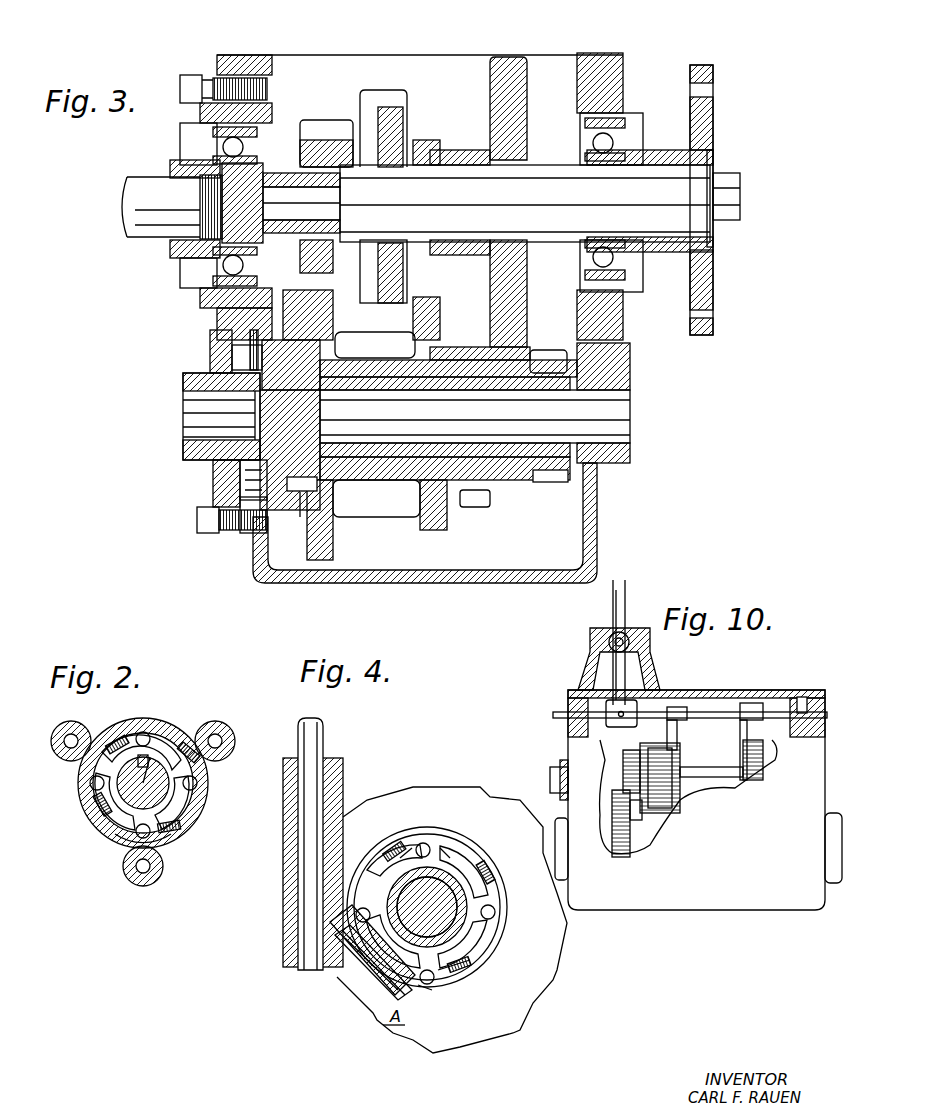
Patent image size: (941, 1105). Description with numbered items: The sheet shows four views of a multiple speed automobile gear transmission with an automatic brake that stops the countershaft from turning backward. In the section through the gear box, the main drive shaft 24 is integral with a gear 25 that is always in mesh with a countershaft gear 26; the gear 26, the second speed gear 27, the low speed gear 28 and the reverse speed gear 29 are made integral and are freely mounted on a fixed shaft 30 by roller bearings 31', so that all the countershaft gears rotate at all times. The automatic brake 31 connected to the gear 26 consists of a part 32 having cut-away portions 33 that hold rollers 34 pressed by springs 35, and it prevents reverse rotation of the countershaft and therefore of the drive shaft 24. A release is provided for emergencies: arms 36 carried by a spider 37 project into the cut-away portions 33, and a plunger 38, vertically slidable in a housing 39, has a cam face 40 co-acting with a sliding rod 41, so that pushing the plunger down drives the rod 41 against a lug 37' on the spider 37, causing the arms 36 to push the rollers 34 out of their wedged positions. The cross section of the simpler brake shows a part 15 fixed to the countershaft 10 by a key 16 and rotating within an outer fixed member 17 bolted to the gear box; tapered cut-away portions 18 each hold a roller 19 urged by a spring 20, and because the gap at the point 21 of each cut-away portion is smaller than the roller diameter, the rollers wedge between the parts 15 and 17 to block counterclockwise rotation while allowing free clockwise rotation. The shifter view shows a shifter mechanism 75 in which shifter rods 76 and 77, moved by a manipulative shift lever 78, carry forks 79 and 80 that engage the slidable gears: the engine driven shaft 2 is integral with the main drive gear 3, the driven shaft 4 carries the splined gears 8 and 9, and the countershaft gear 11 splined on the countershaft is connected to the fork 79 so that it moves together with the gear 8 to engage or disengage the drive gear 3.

In FIG. 10, the engine driven shaft 2 is at (556, 782).
In FIG. 10, the main drive gear 3 is at (627, 773).
In FIG. 3, the driven shaft 4 is at (204, 353).
In FIG. 10, the driven shaft 4 is at (686, 780).
In FIG. 10, the gear 8 is at (660, 810).
In FIG. 10, the gear 9 is at (750, 780).
In FIG. 2, the countershaft 10 is at (112, 837).
In FIG. 10, the countershaft gear 11 is at (618, 842).
In FIG. 2, the part 15 is at (163, 753).
In FIG. 2, the key 16 is at (150, 757).
In FIG. 2, the outer fixed member 17 is at (83, 730).
In FIG. 2, the cut-away portions 18 is at (193, 807).
In FIG. 2, the roller 19 is at (200, 787).
In FIG. 2, the spring 20 is at (220, 768).
In FIG. 2, the point 21 is at (187, 840).
In FIG. 3, the main drive shaft 24 is at (138, 240).
In FIG. 3, the gear 25 is at (302, 122).
In FIG. 3, the countershaft gear 26 is at (335, 324).
In FIG. 4, the countershaft gear 26 is at (493, 900).
In FIG. 3, the second speed gear 27 is at (438, 297).
In FIG. 3, the low speed gear 28 is at (453, 335).
In FIG. 3, the reverse speed gear 29 is at (538, 348).
In FIG. 3, the fixed shaft 30 is at (600, 405).
In FIG. 3, the automatic brake 31 is at (397, 542).
In FIG. 4, the automatic brake 31 is at (441, 907).
In FIG. 3, the roller bearings 31' is at (445, 446).
In FIG. 3, the part 32 is at (310, 465).
In FIG. 4, the part 32 is at (467, 873).
In FIG. 4, the cut-away portions 33 is at (424, 843).
In FIG. 3, the rollers 34 is at (308, 493).
In FIG. 4, the rollers 34 is at (447, 853).
In FIG. 4, the springs 35 is at (407, 840).
In FIG. 3, the arms 36 is at (327, 350).
In FIG. 4, the arms 36 is at (368, 887).
In FIG. 3, the spider 37 is at (210, 542).
In FIG. 4, the spider 37 is at (482, 973).
In FIG. 3, the lug 37' is at (189, 480).
In FIG. 4, the lug 37' is at (444, 1004).
In FIG. 3, the plunger 38 is at (245, 365).
In FIG. 4, the plunger 38 is at (323, 730).
In FIG. 4, the housing 39 is at (343, 773).
In FIG. 4, the cam face 40 is at (332, 960).
In FIG. 4, the sliding rod 41 is at (363, 975).
In FIG. 10, the shifter mechanism 75 is at (717, 700).
In FIG. 10, the shifter rod 76 is at (600, 719).
In FIG. 10, the shifter rod 77 is at (723, 720).
In FIG. 10, the shift lever 78 is at (620, 673).
In FIG. 10, the fork 79 is at (673, 741).
In FIG. 10, the fork 80 is at (760, 750).